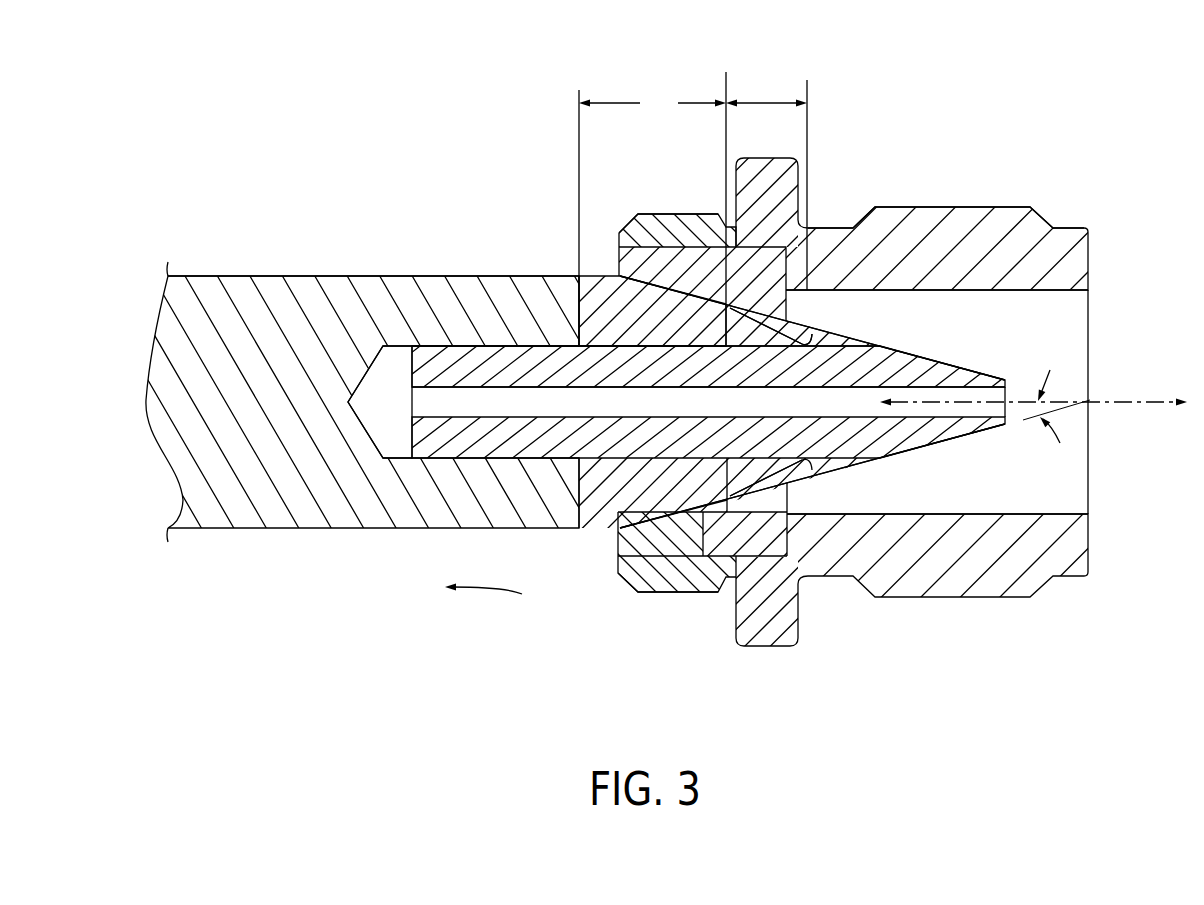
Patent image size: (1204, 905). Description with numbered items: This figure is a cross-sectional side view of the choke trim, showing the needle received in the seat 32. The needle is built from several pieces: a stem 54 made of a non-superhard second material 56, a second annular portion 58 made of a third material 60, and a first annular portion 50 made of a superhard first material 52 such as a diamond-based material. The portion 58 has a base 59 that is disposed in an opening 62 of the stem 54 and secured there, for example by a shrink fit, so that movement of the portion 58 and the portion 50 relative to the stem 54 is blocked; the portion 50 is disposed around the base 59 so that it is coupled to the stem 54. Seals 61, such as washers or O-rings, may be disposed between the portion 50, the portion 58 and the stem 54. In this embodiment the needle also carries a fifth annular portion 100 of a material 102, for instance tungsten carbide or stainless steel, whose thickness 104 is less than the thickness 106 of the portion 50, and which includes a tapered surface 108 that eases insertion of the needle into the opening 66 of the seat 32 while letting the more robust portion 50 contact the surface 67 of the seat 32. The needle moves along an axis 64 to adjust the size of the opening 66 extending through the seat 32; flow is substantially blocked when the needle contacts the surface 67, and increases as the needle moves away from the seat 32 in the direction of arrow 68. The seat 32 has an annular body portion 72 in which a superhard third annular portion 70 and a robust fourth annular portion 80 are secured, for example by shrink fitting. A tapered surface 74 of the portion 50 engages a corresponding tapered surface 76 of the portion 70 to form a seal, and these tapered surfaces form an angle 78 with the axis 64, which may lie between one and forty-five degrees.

The seat 32 is at (1042, 198).
The portion 50 is at (597, 277).
The first material 52 is at (615, 333).
The stem 54 is at (304, 284).
The second material 56 is at (277, 418).
The portion 58 is at (893, 358).
The base 59 is at (455, 372).
The third material 60 is at (807, 381).
The seals 61 is at (576, 273).
The opening 62 is at (394, 375).
The axis 64 is at (1107, 402).
The opening 66 is at (1044, 503).
The surface 67 is at (653, 275).
The arrow 68 is at (499, 600).
The portion 70 is at (664, 276).
The body portion 72 is at (918, 215).
The tapered surface 74 is at (640, 510).
The tapered surface 76 is at (634, 271).
The angle 78 is at (1090, 421).
The portion 80 is at (762, 260).
The portion 100 is at (761, 306).
The material 102 is at (790, 350).
The thickness 104 is at (770, 100).
The thickness 106 is at (652, 174).
The tapered surface 108 is at (763, 294).